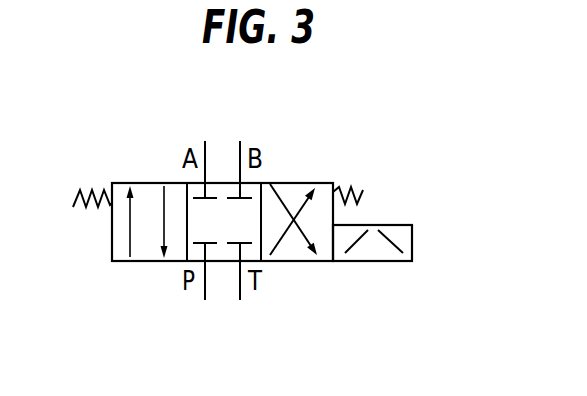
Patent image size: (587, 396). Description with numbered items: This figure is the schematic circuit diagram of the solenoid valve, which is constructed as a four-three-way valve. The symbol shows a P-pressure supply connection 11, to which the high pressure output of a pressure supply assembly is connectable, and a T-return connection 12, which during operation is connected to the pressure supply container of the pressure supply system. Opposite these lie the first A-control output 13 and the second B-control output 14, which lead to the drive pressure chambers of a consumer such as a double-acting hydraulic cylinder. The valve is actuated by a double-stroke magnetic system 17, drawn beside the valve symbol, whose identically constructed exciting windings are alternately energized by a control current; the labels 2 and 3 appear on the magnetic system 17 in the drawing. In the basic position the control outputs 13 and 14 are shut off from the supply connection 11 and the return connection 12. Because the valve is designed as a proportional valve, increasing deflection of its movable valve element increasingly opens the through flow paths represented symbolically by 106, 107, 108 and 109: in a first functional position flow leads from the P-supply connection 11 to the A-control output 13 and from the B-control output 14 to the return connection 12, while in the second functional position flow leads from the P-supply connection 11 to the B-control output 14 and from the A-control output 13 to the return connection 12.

The through flow path 106 is at (130, 223).
The through flow path 107 is at (163, 207).
The A-control output 13 is at (205, 152).
The B-control output 14 is at (240, 142).
The P-pressure supply connection 11 is at (205, 285).
The T-return connection 12 is at (240, 290).
The through flow path 108 is at (297, 201).
The through flow path 109 is at (298, 230).
The double-stroke magnetic system 17 is at (386, 219).
The solenoid terminal 2 is at (350, 264).
The solenoid terminal 3 is at (393, 264).